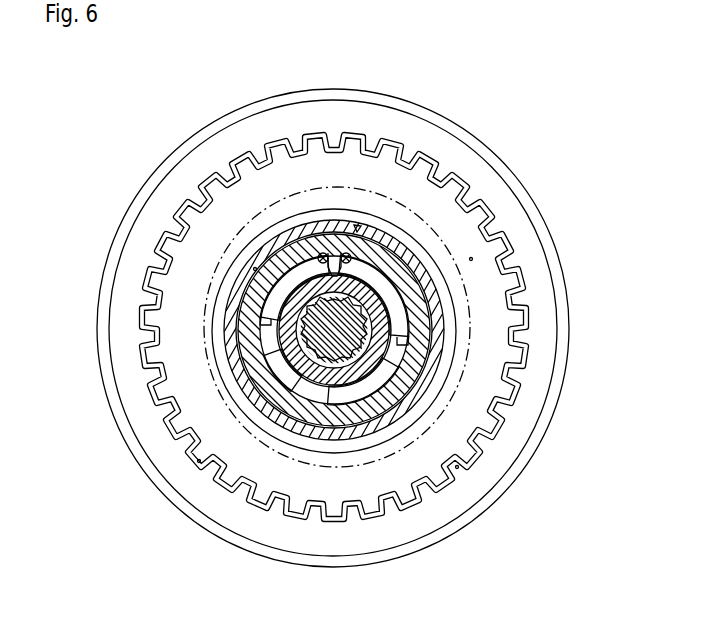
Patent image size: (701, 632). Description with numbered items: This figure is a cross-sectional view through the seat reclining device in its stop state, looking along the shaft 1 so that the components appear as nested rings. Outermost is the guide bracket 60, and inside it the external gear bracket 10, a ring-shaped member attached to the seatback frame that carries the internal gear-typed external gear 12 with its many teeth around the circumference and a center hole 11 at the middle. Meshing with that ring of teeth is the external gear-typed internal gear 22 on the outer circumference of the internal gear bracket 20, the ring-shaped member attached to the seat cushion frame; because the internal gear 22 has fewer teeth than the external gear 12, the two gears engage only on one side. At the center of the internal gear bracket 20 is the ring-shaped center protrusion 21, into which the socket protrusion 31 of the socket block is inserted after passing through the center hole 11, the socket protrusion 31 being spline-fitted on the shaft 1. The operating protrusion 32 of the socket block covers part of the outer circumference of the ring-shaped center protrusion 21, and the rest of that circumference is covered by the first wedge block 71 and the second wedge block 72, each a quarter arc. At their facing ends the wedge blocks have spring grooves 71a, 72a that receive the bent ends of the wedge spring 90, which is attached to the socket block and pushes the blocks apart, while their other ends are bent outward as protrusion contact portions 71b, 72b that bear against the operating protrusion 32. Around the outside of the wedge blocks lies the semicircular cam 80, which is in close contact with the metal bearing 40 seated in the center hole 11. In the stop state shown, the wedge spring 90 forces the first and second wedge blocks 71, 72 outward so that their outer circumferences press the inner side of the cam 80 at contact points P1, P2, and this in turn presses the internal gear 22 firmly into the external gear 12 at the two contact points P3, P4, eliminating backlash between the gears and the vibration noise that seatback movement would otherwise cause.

The shaft 1 is at (283, 396).
The external gear bracket 10 is at (245, 118).
The center hole 11 is at (358, 226).
The external gear 12 is at (287, 136).
The internal gear bracket 20 is at (295, 500).
The ring-shaped center protrusion 21 is at (334, 400).
The internal gear 22 is at (158, 272).
The socket protrusion 31 is at (507, 290).
The operating protrusion 32 is at (353, 413).
The bearing 40 is at (453, 392).
The guide bracket 60 is at (453, 127).
The first wedge block 71 is at (225, 314).
The spring groove 71a is at (305, 236).
The protrusion contact portion 71b is at (230, 356).
The second wedge block 72 is at (415, 258).
The spring groove 72a is at (395, 247).
The protrusion contact portion 72b is at (410, 331).
The cam 80 is at (283, 262).
The wedge spring 90 is at (324, 252).
The contact point P1 is at (254, 268).
The contact point P2 is at (471, 259).
The contact point P3 is at (199, 461).
The contact point P4 is at (457, 467).